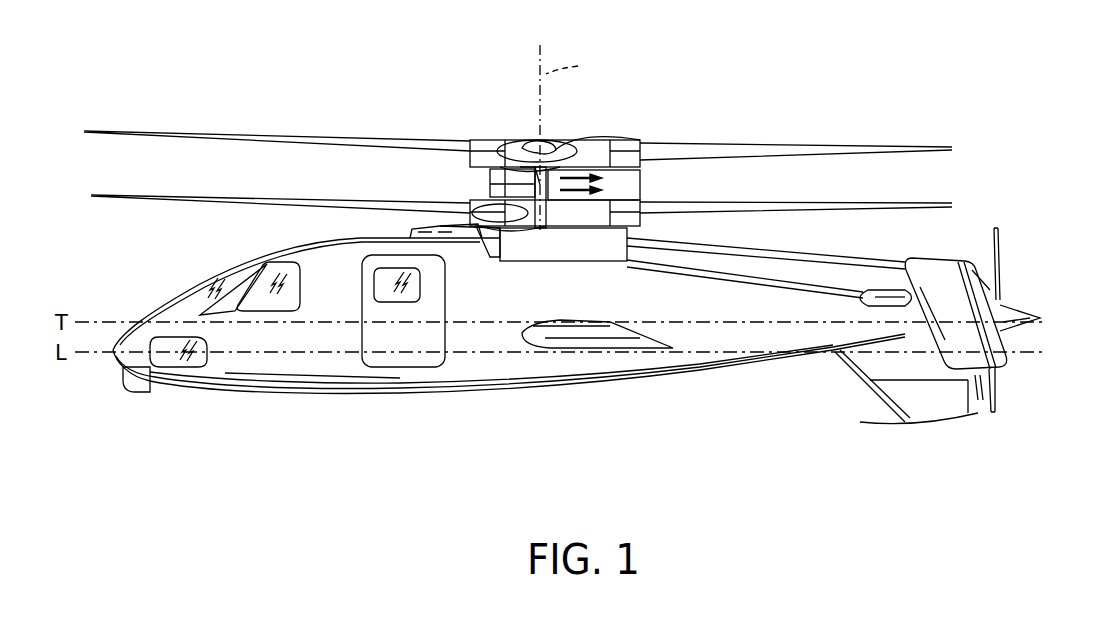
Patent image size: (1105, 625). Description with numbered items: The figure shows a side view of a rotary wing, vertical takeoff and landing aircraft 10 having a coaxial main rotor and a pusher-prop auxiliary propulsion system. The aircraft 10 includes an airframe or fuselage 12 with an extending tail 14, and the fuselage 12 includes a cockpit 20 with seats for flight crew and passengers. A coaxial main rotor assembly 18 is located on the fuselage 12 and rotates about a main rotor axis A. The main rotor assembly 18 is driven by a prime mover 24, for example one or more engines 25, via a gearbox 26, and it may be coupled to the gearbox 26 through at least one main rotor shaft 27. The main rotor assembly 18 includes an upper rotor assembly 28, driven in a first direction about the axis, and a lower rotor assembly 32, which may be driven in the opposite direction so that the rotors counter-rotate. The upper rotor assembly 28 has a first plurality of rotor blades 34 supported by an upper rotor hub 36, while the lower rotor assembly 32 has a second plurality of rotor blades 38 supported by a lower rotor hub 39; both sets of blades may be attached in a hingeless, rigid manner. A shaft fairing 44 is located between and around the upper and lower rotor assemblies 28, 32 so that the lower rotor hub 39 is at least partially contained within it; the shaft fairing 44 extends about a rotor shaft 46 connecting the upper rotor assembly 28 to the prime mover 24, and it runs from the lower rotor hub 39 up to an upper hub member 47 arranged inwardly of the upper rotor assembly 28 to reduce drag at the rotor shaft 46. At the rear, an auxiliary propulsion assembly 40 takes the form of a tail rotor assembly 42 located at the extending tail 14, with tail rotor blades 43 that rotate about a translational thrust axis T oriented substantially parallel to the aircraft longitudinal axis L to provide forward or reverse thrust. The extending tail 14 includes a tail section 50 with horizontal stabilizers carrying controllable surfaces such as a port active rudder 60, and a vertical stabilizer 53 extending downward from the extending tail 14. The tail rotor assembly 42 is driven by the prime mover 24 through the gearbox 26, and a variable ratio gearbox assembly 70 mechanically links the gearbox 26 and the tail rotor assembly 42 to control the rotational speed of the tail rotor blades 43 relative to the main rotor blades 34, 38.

The rotary wing aircraft 10 is at (268, 97).
The fuselage 12 is at (404, 372).
The extending tail 14 is at (657, 350).
The coaxial main rotor assembly 18 is at (524, 116).
The cockpit 20 is at (160, 307).
The prime mover 24 is at (595, 236).
The engines 25 is at (646, 236).
The gearbox 26 is at (515, 246).
The main rotor shaft 27 is at (536, 180).
The upper rotor assembly 28 is at (180, 124).
The lower rotor assembly 32 is at (165, 217).
The first plurality of rotor blades 34 is at (790, 148).
The upper rotor hub 36 is at (541, 143).
The second plurality of rotor blades 38 is at (868, 202).
The lower rotor hub 39 is at (547, 232).
The auxiliary propulsion assembly 40 is at (985, 424).
The tail rotor assembly 42 is at (1008, 246).
The tail rotor blades 43 is at (1000, 396).
The shaft fairing 44 is at (630, 186).
The rotor shaft 46 is at (496, 185).
The upper hub member 47 is at (590, 165).
The tail section 50 is at (955, 220).
The vertical stabilizer 53 is at (912, 405).
The port active rudder 60 is at (985, 300).
The variable ratio gearbox assembly 70 is at (840, 312).